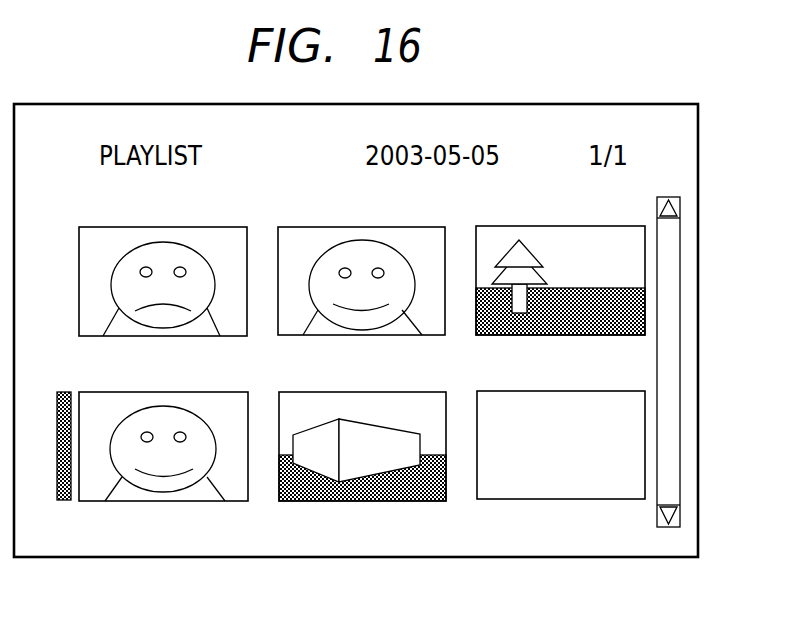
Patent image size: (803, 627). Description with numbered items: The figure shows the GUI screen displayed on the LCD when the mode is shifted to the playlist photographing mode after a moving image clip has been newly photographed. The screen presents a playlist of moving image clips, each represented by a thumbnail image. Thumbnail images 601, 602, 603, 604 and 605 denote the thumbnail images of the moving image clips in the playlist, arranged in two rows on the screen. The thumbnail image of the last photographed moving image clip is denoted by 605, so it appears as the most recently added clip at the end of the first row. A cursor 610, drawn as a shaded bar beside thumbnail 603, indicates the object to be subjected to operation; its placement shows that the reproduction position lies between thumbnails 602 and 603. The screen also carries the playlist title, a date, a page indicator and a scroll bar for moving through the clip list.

The thumbnail image 601 is at (103, 227).
The thumbnail image 602 is at (302, 227).
The thumbnail image 603 is at (103, 392).
The thumbnail image 604 is at (302, 392).
The thumbnail image 605 is at (500, 226).
The cursor 610 is at (60, 502).